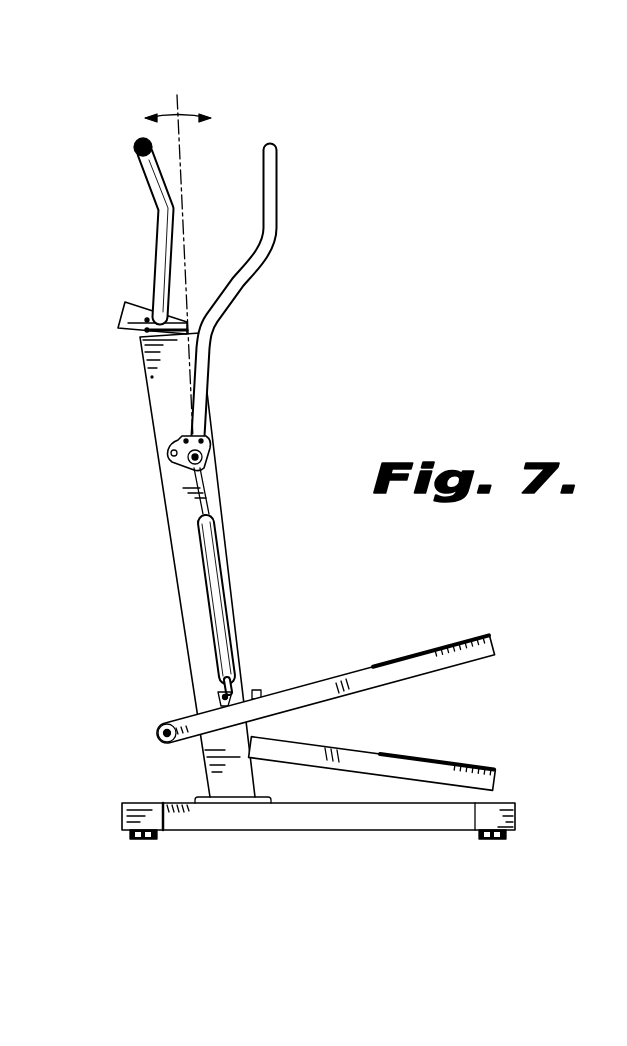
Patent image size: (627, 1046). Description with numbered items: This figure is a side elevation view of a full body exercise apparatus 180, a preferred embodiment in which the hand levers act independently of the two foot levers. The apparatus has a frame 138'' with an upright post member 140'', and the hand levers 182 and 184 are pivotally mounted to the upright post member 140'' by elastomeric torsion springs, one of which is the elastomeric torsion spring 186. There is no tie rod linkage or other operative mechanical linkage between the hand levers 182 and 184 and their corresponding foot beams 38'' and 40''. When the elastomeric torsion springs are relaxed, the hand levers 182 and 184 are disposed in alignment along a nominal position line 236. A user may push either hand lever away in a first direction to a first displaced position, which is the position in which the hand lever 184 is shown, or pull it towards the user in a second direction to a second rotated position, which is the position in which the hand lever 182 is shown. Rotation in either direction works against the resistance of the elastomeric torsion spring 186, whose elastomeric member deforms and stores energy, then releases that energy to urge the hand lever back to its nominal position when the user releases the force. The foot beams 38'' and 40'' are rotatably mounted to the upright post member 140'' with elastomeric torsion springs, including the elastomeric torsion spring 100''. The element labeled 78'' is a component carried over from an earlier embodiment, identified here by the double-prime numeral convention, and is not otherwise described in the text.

The full body exercise apparatus 180 is at (384, 403).
The hand lever 182 is at (277, 182).
The hand lever 184 is at (140, 167).
The nominal position line 236 is at (183, 158).
The upright post member 140'' is at (164, 552).
The elastomeric torsion spring 186 is at (210, 453).
The hydraulic cylinder 78'' is at (183, 587).
The foot beam 38'' is at (326, 675).
The foot beam 40'' is at (372, 747).
The elastomeric torsion spring 100'' is at (131, 719).
The frame 138'' is at (318, 843).